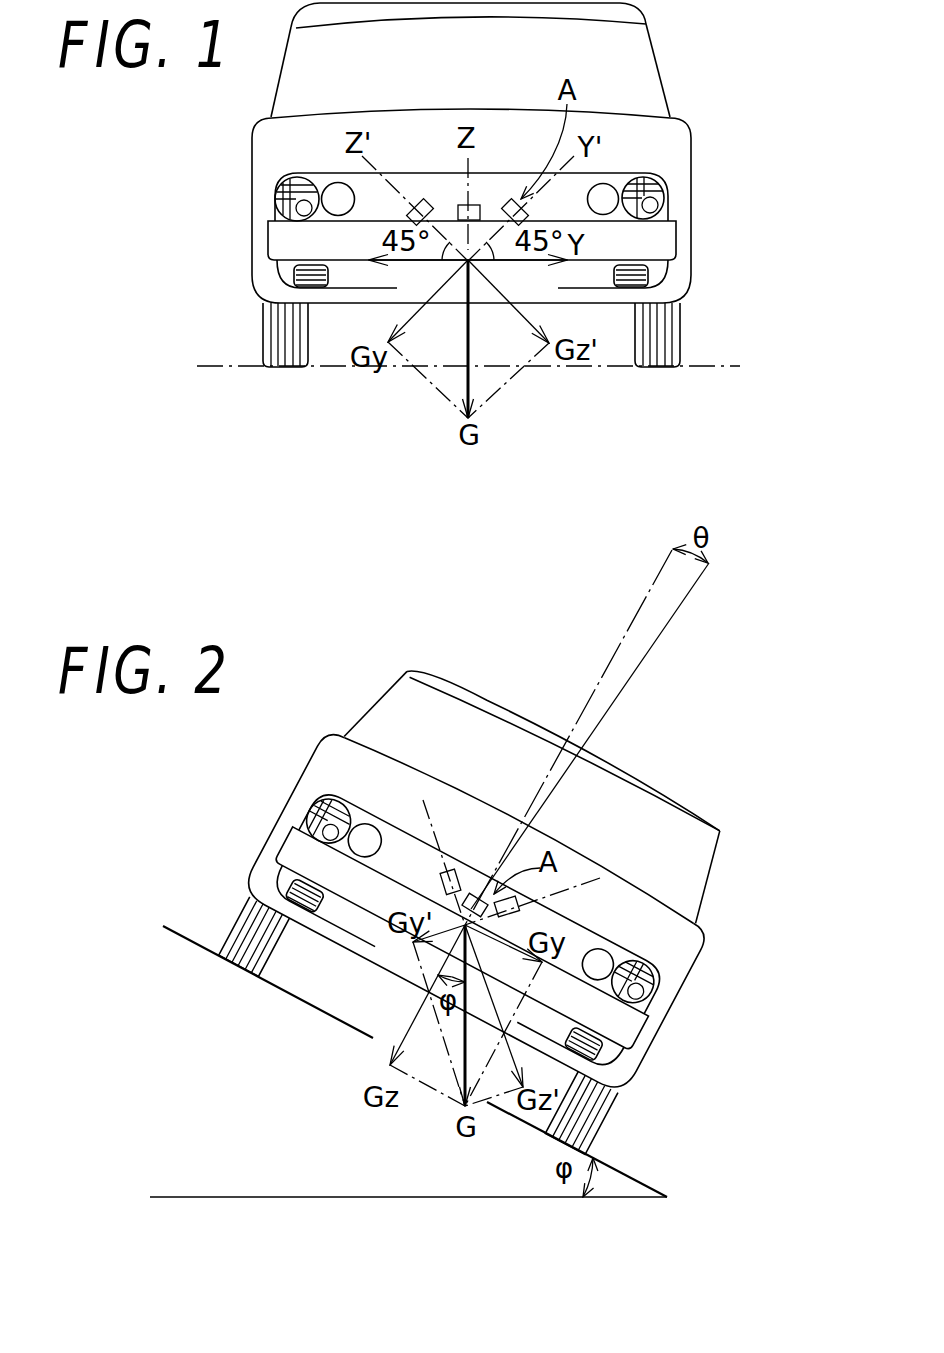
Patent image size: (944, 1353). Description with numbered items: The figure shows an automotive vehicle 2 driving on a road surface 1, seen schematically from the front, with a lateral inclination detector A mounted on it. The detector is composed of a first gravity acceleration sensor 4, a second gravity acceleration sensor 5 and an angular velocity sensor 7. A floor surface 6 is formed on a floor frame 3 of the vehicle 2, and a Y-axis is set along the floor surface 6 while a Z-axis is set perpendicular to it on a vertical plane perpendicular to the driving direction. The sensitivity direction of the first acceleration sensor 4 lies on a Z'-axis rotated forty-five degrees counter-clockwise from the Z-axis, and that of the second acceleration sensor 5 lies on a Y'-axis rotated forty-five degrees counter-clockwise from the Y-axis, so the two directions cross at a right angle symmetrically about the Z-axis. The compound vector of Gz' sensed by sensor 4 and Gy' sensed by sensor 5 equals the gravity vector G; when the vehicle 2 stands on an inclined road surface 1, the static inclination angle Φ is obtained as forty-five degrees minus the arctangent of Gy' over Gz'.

In FIG. 1, the road surface 1 is at (735, 365).
In FIG. 2, the road surface 1 is at (632, 1176).
In FIG. 1, the vehicle 2 is at (693, 136).
In FIG. 2, the vehicle 2 is at (700, 931).
In FIG. 1, the floor frame 3 is at (330, 305).
In FIG. 2, the floor frame 3 is at (362, 963).
In FIG. 1, the first gravity acceleration sensor 4 is at (420, 203).
In FIG. 2, the first gravity acceleration sensor 4 is at (441, 878).
In FIG. 1, the second gravity acceleration sensor 5 is at (526, 212).
In FIG. 2, the second gravity acceleration sensor 5 is at (518, 908).
In FIG. 1, the floor surface 6 is at (385, 258).
In FIG. 1, the angular velocity sensor 7 is at (481, 206).
In FIG. 2, the angular velocity sensor 7 is at (470, 896).